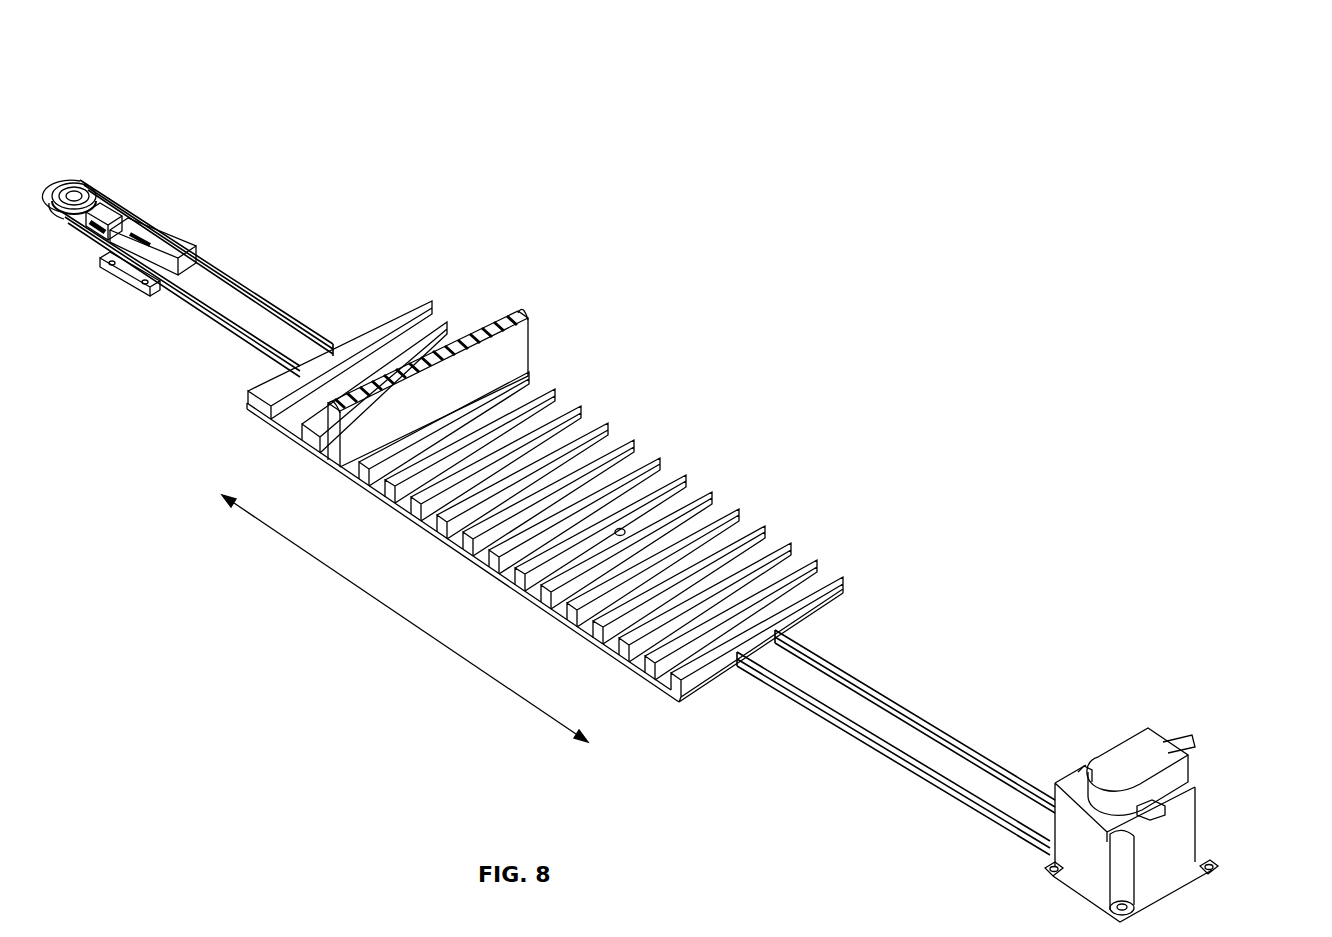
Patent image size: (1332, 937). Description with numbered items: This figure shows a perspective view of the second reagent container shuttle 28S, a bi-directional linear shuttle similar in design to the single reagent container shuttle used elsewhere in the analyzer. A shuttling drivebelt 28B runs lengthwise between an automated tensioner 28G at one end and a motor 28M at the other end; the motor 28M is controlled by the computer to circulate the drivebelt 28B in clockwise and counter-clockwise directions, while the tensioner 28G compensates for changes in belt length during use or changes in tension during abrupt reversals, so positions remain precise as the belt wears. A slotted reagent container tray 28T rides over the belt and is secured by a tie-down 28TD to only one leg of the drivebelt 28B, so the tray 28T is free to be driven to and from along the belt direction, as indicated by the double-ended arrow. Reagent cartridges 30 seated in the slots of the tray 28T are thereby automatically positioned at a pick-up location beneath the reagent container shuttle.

The reagent container shuttle 28S is at (937, 196).
The automated tensioner 28G is at (133, 178).
The drivebelt 28B is at (268, 285).
The slotted reagent container tray 28T is at (830, 596).
The tie-down 28TD is at (622, 528).
The reagent container 30 is at (493, 310).
The motor 28M is at (1153, 752).